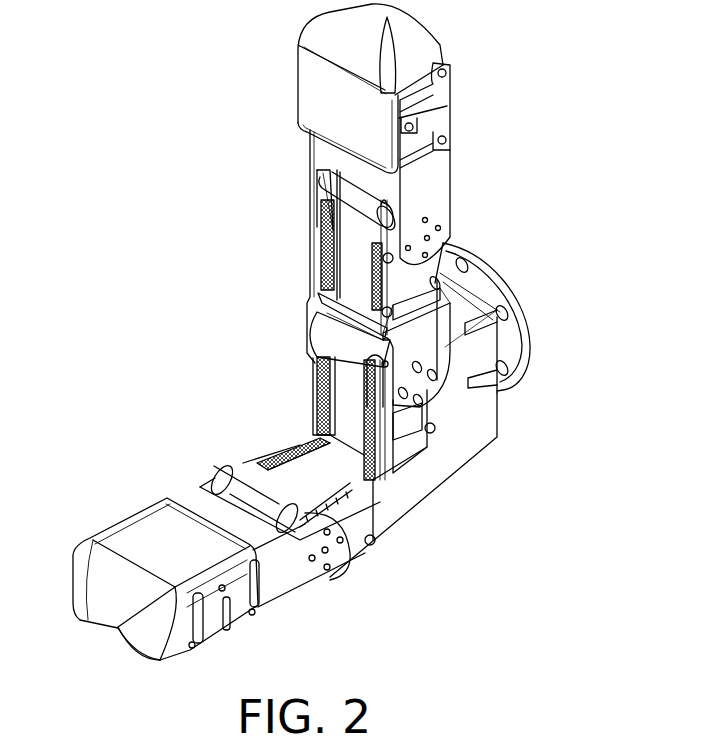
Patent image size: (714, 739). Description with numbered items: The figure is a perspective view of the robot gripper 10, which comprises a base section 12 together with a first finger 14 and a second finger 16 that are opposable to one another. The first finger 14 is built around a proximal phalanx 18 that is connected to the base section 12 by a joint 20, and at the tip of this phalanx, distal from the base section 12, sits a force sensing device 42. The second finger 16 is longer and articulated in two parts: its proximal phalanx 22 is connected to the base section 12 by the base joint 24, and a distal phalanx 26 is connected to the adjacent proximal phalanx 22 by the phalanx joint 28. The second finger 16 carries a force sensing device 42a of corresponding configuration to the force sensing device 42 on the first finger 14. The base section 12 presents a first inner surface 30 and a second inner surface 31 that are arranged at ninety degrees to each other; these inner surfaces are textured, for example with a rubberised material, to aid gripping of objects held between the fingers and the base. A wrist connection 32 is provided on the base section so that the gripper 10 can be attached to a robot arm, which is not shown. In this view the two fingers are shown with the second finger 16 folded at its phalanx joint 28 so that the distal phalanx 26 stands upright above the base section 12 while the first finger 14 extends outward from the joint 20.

The robot gripper 10 is at (146, 50).
The base section 12 is at (417, 493).
The first finger 14 is at (276, 610).
The second finger 16 is at (528, 165).
The proximal phalanx 18 is at (212, 507).
The joint 20 is at (330, 558).
The proximal phalanx 22 is at (318, 262).
The base joint 24 is at (432, 387).
The distal phalanx 26 is at (318, 150).
The phalanx joint 28 is at (440, 226).
The first inner surface 30 is at (300, 455).
The second inner surface 31 is at (318, 372).
The wrist connection 32 is at (498, 293).
The force sensing device 42 is at (78, 537).
The force sensing device 42a is at (467, 92).